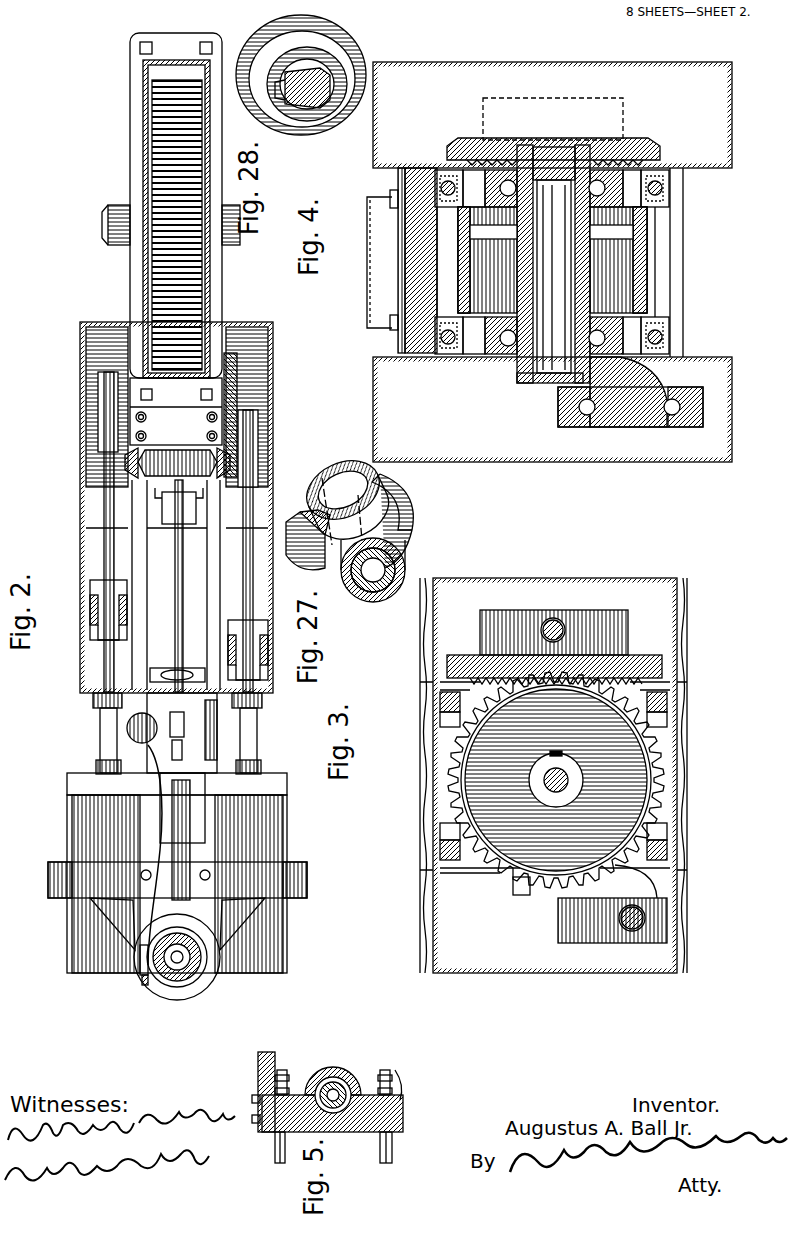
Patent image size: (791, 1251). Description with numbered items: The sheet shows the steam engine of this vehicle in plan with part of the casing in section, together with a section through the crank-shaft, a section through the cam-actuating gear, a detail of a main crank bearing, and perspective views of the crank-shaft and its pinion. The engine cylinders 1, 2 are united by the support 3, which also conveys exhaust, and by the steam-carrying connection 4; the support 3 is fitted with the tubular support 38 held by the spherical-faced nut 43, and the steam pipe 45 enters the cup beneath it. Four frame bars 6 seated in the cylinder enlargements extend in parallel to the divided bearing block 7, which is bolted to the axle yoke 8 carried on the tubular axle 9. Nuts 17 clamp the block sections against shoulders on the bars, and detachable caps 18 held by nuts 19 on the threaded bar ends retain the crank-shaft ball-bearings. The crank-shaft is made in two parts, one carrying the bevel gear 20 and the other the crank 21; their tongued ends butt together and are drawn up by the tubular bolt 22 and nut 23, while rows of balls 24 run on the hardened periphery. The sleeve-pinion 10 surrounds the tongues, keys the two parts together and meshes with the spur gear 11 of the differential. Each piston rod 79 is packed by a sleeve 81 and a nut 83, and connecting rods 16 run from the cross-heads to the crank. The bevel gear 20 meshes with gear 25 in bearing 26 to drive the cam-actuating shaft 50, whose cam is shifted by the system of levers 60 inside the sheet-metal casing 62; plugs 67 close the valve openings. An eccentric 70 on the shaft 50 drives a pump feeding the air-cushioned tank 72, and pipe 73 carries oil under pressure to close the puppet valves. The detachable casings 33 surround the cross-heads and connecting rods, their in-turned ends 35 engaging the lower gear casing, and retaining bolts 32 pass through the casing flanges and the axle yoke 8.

In FIG. 2, the cylinder 1 is at (77, 942).
In FIG. 2, the cylinder 2 is at (288, 822).
In FIG. 2, the support 3 is at (70, 495).
In FIG. 2, the steam-carrying connection 4 is at (70, 415).
In FIG. 2, the frame bar 6 is at (214, 612).
In FIG. 3, the frame bar 6 is at (667, 700).
In FIG. 5, the frame bar 6 is at (280, 1163).
In FIG. 5, the divided bearing block 7 is at (362, 1133).
In FIG. 2, the axle yoke 8 is at (135, 292).
In FIG. 4, the axle yoke 8 is at (398, 333).
In FIG. 2, the tubular axle 9 is at (118, 207).
In FIG. 28, the pinion 10 is at (325, 125).
In FIG. 4, the pinion 10 is at (650, 230).
In FIG. 27, the pinion 10 is at (410, 527).
In FIG. 2, the spur gear 11 is at (200, 282).
In FIG. 2, the connecting rod 16 is at (103, 560).
In FIG. 3, the connecting rod 16 is at (552, 618).
In FIG. 5, the nut 17 is at (257, 1087).
In FIG. 4, the detachable cap 18 is at (450, 172).
In FIG. 5, the detachable cap 18 is at (315, 1065).
In FIG. 5, the nut 19 is at (385, 1068).
In FIG. 2, the bevel gear 20 is at (240, 380).
In FIG. 4, the bevel gear 20 is at (460, 138).
In FIG. 27, the bevel gear 20 is at (345, 468).
In FIG. 3, the bevel gear 20 is at (475, 653).
In FIG. 4, the crank 21 is at (627, 410).
In FIG. 27, the crank 21 is at (350, 590).
In FIG. 3, the crank 21 is at (536, 895).
In FIG. 4, the tubular bolt 22 is at (545, 376).
In FIG. 27, the tubular bolt 22 is at (375, 584).
In FIG. 4, the nut 23 is at (555, 150).
In FIG. 4, the balls 24 is at (505, 346).
In FIG. 2, the gear 25 is at (195, 478).
In FIG. 3, the gear 25 is at (556, 780).
In FIG. 2, the bearing 26 is at (170, 500).
In FIG. 2, the retaining bolt 32 is at (140, 50).
In FIG. 2, the detachable casing 33 is at (89, 636).
In FIG. 4, the detachable casing 33 is at (732, 104).
In FIG. 3, the detachable casing 33 is at (588, 578).
In FIG. 2, the in-turned end 35 is at (246, 322).
In FIG. 2, the tubular support 38 is at (135, 125).
In FIG. 4, the tubular support 38 is at (372, 215).
In FIG. 2, the nut 43 is at (198, 975).
In FIG. 2, the steam pipe 45 is at (179, 965).
In FIG. 2, the cam-actuating shaft 50 is at (175, 610).
In FIG. 2, the system of levers 60 is at (180, 796).
In FIG. 2, the sheet-metal casing 62 is at (184, 718).
In FIG. 2, the screw-threaded plug 67 is at (205, 757).
In FIG. 2, the eccentric 70 is at (183, 693).
In FIG. 2, the tank 72 is at (127, 728).
In FIG. 2, the pipe 73 is at (147, 760).
In FIG. 2, the piston rod 79 is at (273, 700).
In FIG. 2, the sleeve 81 is at (258, 728).
In FIG. 2, the nut 83 is at (218, 730).